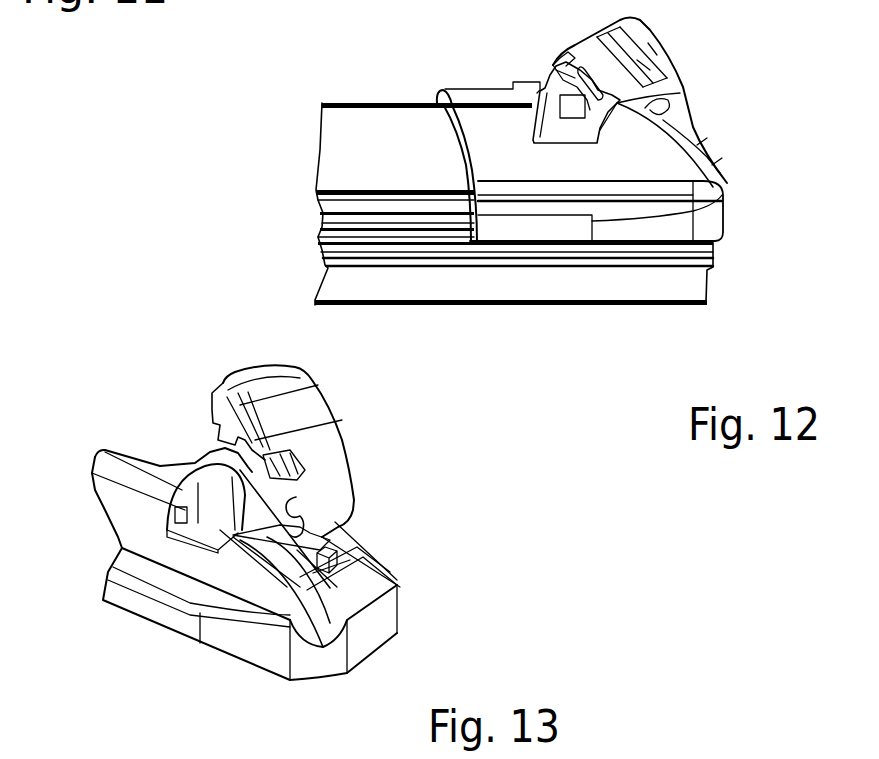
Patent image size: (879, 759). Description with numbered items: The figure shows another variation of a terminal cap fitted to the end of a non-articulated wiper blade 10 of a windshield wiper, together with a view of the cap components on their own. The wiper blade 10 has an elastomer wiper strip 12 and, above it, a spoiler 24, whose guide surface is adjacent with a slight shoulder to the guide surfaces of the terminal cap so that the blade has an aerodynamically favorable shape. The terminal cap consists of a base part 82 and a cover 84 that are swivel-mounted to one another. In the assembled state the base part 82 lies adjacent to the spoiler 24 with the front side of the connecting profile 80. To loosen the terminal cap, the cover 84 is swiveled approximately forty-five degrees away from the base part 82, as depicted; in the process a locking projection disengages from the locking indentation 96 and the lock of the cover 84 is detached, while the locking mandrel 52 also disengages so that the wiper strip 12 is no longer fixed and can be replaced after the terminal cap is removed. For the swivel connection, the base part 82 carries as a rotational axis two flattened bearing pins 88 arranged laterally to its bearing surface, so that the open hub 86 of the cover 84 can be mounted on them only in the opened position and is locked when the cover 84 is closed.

In FIG. 12, the wiper blade 10 is at (303, 86).
In FIG. 12, the wiper strip 12 is at (330, 267).
In FIG. 12, the spoiler 24 is at (365, 143).
In FIG. 12, the locking mandrel 52 is at (543, 110).
In FIG. 13, the connecting profile 80 is at (100, 457).
In FIG. 12, the base part 82 is at (708, 218).
In FIG. 13, the base part 82 is at (350, 607).
In FIG. 12, the cover 84 is at (646, 45).
In FIG. 13, the cover 84 is at (313, 423).
In FIG. 13, the open hub 86 is at (305, 505).
In FIG. 13, the bearing pins 88 is at (340, 560).
In FIG. 12, the locking indentation 96 is at (565, 55).